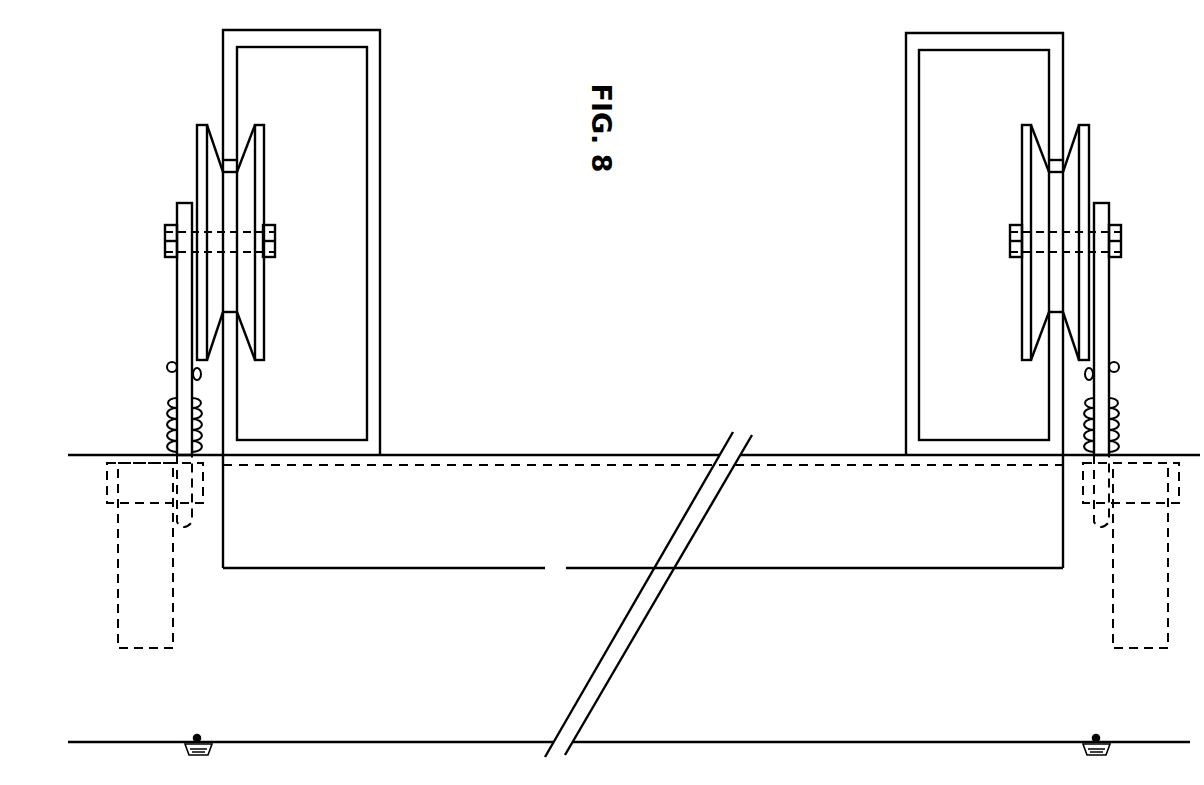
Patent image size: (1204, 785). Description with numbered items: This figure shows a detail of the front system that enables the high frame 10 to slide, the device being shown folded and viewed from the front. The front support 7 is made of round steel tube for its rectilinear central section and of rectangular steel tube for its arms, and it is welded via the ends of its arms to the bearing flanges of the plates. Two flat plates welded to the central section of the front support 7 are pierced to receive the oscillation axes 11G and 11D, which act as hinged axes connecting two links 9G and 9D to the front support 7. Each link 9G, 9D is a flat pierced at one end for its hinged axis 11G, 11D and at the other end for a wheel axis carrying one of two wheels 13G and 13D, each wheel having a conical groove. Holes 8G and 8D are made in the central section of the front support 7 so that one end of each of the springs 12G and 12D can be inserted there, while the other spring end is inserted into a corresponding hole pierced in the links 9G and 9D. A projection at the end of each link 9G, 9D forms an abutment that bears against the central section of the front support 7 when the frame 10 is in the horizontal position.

The front support 7 is at (448, 653).
The hole 8D is at (197, 737).
The hole 8G is at (1100, 731).
The link 9D is at (181, 279).
The link 9G is at (1098, 278).
The frame 10 is at (373, 73).
The oscillation axis 11D is at (197, 483).
The oscillation axis 11G is at (1092, 481).
The spring 12D is at (160, 440).
The spring 12G is at (1112, 443).
The wheel 13D is at (202, 154).
The wheel 13G is at (1084, 152).